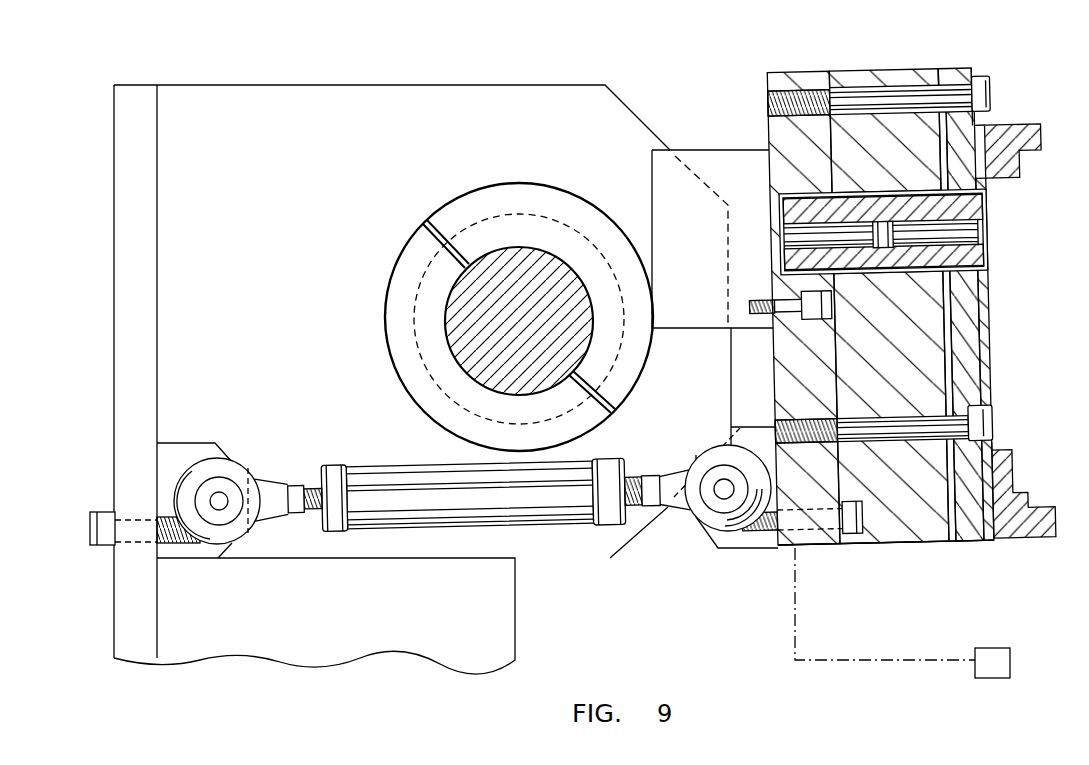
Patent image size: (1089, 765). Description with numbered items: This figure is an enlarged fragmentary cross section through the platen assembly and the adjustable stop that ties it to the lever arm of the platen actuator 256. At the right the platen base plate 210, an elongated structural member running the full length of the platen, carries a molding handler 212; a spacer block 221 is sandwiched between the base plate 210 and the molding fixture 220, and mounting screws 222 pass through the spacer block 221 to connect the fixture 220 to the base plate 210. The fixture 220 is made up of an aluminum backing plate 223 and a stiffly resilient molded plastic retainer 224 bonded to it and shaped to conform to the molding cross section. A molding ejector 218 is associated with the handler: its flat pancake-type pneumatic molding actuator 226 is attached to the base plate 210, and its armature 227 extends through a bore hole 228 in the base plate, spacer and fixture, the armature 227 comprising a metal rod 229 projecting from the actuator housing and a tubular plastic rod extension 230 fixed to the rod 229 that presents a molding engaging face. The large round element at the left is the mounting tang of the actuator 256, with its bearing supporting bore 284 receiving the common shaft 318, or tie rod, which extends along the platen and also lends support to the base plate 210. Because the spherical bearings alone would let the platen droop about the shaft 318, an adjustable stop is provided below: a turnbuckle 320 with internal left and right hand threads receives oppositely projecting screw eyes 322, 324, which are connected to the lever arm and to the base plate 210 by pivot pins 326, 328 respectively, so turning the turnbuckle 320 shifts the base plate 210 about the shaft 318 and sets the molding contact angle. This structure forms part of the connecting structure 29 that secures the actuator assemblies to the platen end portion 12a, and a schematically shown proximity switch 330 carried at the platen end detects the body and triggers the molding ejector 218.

The platen end portion 12a is at (864, 547).
The connecting structure 29 is at (633, 512).
The platen base plate 210 is at (800, 78).
The molding handler 212 is at (1082, 46).
The molding ejector 218 is at (757, 148).
The molding fixture 220 is at (945, 547).
The spacer block 221 is at (932, 337).
The mounting screws 222 is at (885, 92).
The backing plate 223 is at (975, 525).
The retainer 224 is at (970, 388).
The molding actuator 226 is at (652, 178).
The armature 227 is at (988, 250).
The bore hole 228 is at (988, 208).
The metal rod 229 is at (815, 230).
The rod extension 230 is at (800, 268).
The platen actuator 256 is at (140, 623).
The bearing supporting bore 284 is at (440, 224).
The shaft 318 is at (446, 294).
The turnbuckle 320 is at (450, 517).
The screw eye 322 is at (310, 518).
The screw eye 324 is at (647, 480).
The pivot pin 326 is at (219, 498).
The pivot pin 328 is at (728, 486).
The proximity switch 330 is at (975, 670).